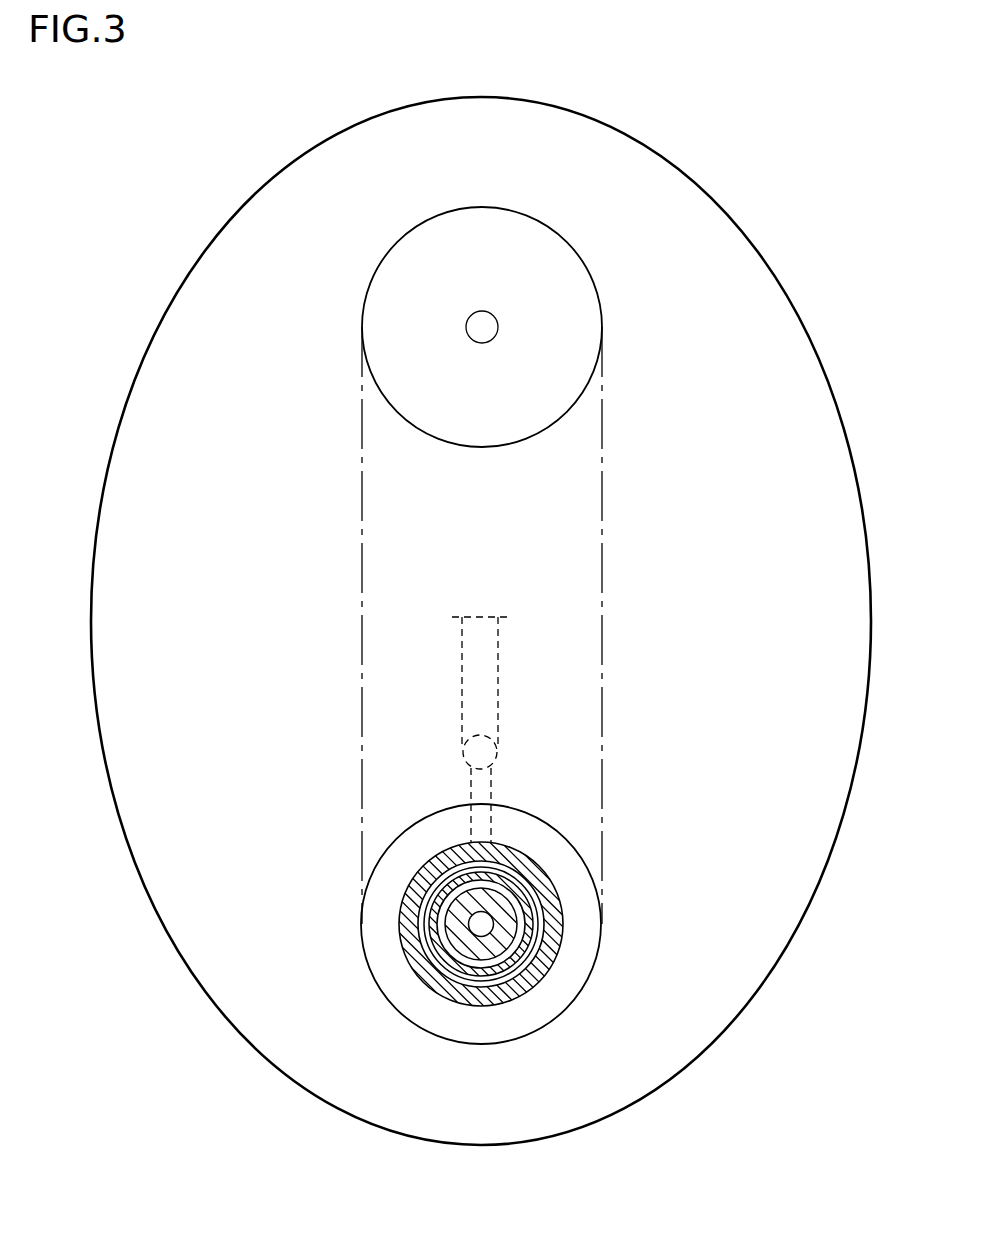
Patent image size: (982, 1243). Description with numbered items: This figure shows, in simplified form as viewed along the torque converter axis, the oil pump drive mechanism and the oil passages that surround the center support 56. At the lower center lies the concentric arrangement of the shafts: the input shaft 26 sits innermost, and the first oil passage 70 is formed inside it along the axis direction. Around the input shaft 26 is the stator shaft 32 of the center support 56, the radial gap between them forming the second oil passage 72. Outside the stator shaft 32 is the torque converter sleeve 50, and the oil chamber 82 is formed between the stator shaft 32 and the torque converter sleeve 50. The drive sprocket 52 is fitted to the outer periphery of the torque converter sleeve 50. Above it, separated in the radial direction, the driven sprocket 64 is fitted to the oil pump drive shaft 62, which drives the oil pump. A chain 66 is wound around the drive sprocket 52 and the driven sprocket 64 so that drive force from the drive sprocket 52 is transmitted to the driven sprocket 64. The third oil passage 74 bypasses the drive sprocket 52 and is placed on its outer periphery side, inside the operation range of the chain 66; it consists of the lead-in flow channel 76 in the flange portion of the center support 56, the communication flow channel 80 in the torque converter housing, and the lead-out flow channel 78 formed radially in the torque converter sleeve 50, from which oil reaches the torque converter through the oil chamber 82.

The center support 56 is at (190, 313).
The driven sprocket 64 is at (382, 296).
The oil pump drive shaft 62 is at (482, 325).
The chain 66 is at (360, 592).
The third oil passage 74 is at (500, 706).
The lead-in flow channel 76 is at (463, 673).
The communication flow channel 80 is at (492, 786).
The lead-out flow channel 78 is at (440, 845).
The torque converter sleeve 50 is at (542, 872).
The drive sprocket 52 is at (432, 1015).
The oil chamber 82 is at (547, 935).
The stator shaft 32 is at (517, 965).
The first oil passage 70 is at (437, 890).
The second oil passage 72 is at (446, 949).
The input shaft 26 is at (474, 925).